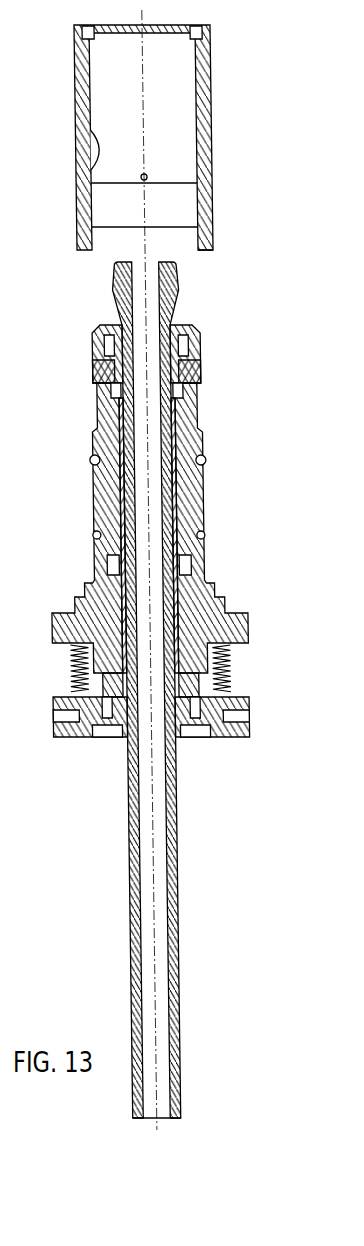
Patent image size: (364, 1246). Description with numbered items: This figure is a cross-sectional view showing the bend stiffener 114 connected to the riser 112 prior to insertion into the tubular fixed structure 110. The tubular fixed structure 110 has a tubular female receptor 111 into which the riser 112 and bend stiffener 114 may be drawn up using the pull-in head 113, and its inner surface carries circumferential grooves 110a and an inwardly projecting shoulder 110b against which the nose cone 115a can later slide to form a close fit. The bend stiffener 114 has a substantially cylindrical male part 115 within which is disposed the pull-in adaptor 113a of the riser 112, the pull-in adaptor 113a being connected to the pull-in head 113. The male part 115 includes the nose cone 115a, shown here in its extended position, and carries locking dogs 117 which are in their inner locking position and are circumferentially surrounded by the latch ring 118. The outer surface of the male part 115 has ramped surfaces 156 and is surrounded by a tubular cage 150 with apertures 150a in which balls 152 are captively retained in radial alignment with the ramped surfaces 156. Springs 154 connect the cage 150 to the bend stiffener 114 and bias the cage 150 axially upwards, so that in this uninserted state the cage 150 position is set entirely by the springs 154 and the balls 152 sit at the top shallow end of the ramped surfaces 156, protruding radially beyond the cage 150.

The tubular fixed structure 110 is at (214, 136).
The circumferential grooves 110a is at (92, 168).
The inwardly projecting shoulder 110b is at (84, 47).
The tubular female receptor 111 is at (206, 252).
The pull-in head 113 is at (176, 301).
The pull-in adaptor 113a is at (116, 392).
The nose cone 115a is at (97, 350).
The latch ring 118 is at (100, 378).
The locking dogs 117 is at (200, 364).
The riser 112 is at (190, 388).
The tubular cage 150 is at (204, 480).
The apertures 150a is at (203, 452).
The male part 115 is at (192, 507).
The balls 152 is at (206, 535).
The ramped surfaces 156 is at (186, 565).
The springs 154 is at (232, 672).
The bend stiffener 114 is at (250, 729).